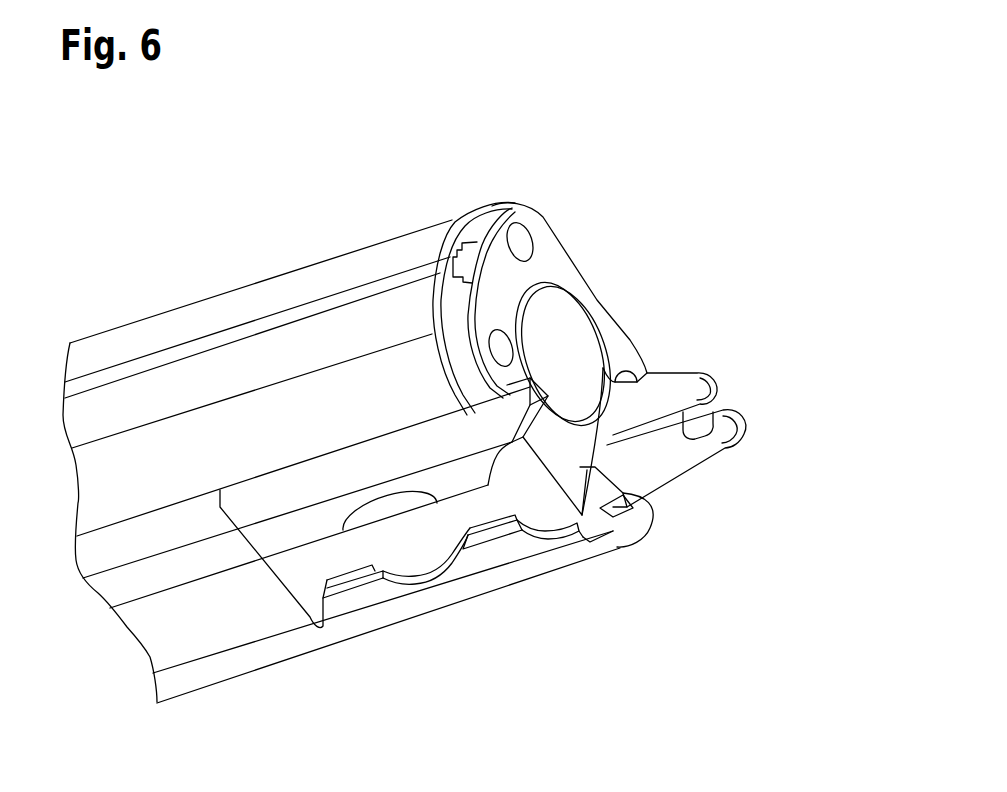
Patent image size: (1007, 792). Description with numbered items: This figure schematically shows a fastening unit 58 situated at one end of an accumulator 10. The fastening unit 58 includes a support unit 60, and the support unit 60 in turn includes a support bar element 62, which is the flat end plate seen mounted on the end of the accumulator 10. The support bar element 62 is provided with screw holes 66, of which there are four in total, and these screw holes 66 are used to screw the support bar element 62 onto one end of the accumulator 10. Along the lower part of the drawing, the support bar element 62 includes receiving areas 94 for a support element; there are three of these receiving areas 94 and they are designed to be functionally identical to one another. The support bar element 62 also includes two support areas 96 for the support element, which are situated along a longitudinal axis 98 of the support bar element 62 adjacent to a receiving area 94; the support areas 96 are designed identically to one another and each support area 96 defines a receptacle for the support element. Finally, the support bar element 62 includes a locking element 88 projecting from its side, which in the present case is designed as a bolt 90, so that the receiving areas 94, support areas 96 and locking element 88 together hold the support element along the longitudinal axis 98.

The accumulator 10 is at (297, 288).
The fastening unit 58 is at (617, 210).
The support unit 60 is at (457, 620).
The support bar element 62 is at (593, 324).
The screw holes 66 is at (538, 221).
The locking element 88 is at (723, 407).
The bolt 90 is at (676, 458).
The receiving areas 94 is at (393, 590).
The support areas 96 is at (332, 603).
The longitudinal axis 98 is at (632, 619).